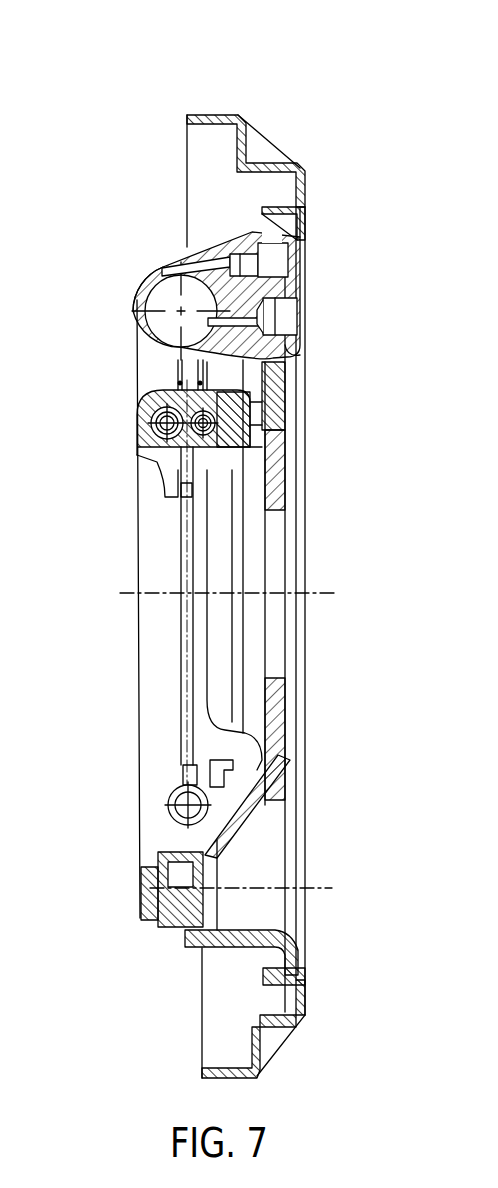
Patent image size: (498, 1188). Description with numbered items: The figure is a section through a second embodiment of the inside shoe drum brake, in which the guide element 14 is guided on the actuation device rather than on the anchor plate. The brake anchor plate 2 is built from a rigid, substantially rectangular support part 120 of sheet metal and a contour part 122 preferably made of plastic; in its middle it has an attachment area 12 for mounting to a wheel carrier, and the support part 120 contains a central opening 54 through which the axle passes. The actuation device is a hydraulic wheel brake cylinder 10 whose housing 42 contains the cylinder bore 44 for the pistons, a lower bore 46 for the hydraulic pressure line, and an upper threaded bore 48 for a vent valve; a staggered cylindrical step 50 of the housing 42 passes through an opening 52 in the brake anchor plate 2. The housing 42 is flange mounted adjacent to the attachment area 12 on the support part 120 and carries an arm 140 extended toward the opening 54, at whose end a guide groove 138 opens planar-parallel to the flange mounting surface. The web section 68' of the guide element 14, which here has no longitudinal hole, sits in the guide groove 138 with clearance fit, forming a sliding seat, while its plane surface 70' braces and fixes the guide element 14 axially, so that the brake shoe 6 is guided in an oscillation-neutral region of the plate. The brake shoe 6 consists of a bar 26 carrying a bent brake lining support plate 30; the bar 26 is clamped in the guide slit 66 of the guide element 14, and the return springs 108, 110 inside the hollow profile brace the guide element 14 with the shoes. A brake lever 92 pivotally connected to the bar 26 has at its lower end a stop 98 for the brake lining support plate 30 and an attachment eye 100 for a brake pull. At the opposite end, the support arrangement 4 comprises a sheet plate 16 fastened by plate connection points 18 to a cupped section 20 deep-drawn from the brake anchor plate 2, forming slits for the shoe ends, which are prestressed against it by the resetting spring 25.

The brake anchor plate 2 is at (246, 110).
The contour part 122 is at (300, 165).
The hydraulic wheel brake cylinder 10 is at (219, 283).
The cylinder bore 44 is at (165, 300).
The housing 42 is at (139, 327).
The guide element 14 is at (150, 448).
The return spring 108 is at (162, 422).
The return spring 110 is at (146, 457).
The guide slit 66 is at (178, 494).
The brake shoe 6 is at (132, 670).
The bar 26 is at (183, 763).
The brake lining support plate 30 is at (182, 786).
The stop 98 is at (170, 797).
The sheet plate 16 is at (158, 866).
The plate connection points 18 is at (180, 893).
The support arrangement 4 is at (142, 927).
The cupped section 20 is at (191, 938).
The upper bore 48 is at (256, 260).
The staggered cylindrical step 50 is at (297, 292).
The lower bore 46 is at (290, 312).
The opening 52 is at (292, 342).
The web section 68' is at (316, 383).
The plane surface 70' is at (316, 408).
The arm 140 is at (275, 438).
The guide groove 138 is at (280, 466).
The central opening 54 is at (282, 534).
The support part 120 is at (297, 687).
The attachment area 12 is at (296, 708).
The brake lever 92 is at (222, 736).
The attachment eye 100 is at (230, 767).
The resetting spring 25 is at (262, 808).